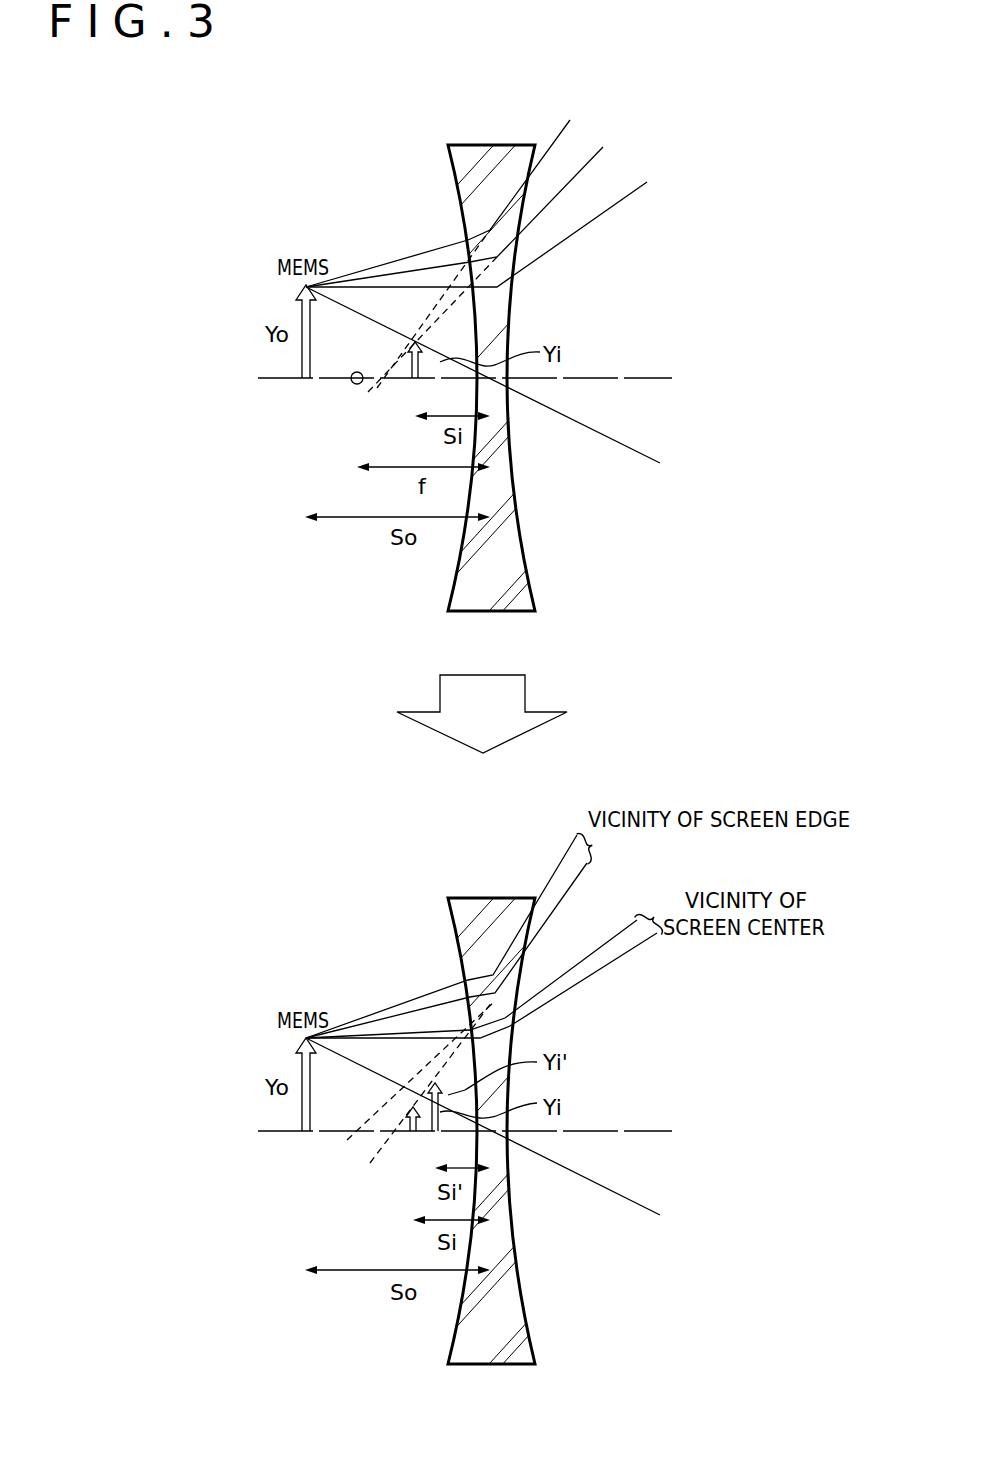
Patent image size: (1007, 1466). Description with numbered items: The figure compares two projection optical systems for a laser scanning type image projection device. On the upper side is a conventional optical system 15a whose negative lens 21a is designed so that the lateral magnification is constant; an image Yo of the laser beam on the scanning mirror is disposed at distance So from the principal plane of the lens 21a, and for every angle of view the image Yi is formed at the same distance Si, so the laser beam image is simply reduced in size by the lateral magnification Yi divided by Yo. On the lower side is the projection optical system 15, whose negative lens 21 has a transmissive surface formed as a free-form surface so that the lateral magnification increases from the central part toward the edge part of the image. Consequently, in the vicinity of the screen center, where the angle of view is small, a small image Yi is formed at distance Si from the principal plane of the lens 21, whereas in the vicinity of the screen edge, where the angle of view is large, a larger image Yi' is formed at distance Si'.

The conventional optical system 15a is at (522, 102).
The negative lens 21a is at (452, 171).
The projection optical system 15 is at (506, 850).
The negative lens 21 is at (452, 924).